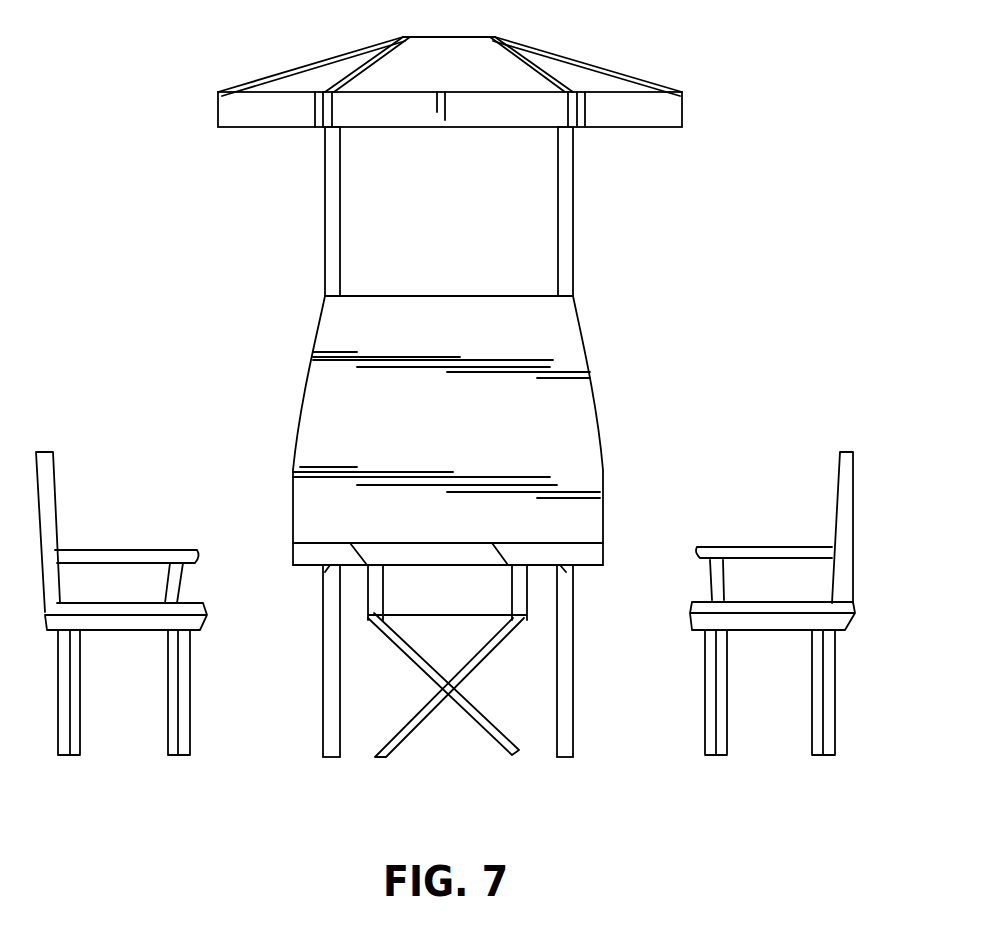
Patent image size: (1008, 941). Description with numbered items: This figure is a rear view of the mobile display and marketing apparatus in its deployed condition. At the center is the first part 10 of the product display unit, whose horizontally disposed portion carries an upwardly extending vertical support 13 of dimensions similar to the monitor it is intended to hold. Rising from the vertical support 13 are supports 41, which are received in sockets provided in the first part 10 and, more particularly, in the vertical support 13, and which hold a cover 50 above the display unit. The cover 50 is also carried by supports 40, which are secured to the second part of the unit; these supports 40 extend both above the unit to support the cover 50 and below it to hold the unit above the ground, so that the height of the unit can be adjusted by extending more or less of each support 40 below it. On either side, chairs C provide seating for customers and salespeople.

The cover 50 is at (570, 57).
The supports 41 is at (340, 218).
The vertical support 13 is at (537, 378).
The first part 10 is at (521, 526).
The supports 40 is at (323, 705).
The chairs C is at (53, 507).